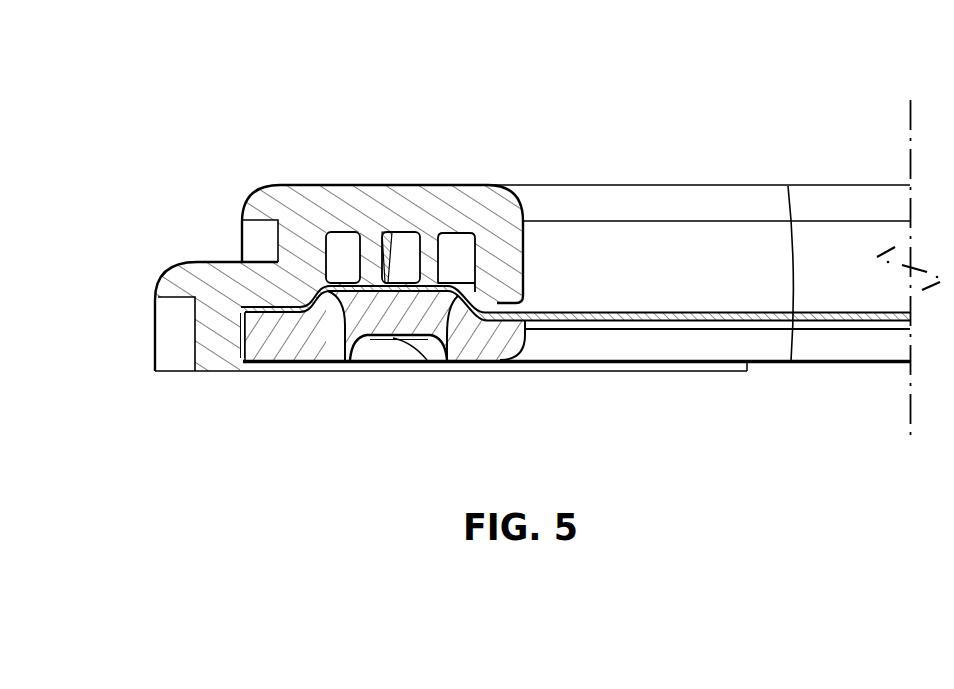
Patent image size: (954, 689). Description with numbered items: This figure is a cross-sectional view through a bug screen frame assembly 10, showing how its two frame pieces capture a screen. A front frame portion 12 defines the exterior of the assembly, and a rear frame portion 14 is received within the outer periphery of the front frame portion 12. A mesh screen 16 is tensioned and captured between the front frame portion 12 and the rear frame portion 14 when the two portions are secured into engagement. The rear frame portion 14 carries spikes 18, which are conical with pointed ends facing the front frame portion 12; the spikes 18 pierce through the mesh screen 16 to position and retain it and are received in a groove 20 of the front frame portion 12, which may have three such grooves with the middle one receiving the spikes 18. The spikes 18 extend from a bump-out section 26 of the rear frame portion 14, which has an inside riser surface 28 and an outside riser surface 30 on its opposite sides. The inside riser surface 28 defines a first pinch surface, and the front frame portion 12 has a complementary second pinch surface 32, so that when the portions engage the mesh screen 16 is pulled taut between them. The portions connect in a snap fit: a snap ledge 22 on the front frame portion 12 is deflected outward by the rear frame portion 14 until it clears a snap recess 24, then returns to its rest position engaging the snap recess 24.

The bug screen frame assembly 10 is at (209, 126).
The front frame portion 12 is at (277, 197).
The rear frame portion 14 is at (472, 345).
The mesh screen 16 is at (670, 317).
The spikes 18 is at (402, 262).
The groove 20 is at (407, 241).
The snap ledge 22 is at (246, 345).
The snap recess 24 is at (275, 345).
The bump-out section 26 is at (387, 304).
The inside riser surface 28 is at (448, 340).
The outside riser surface 30 is at (345, 342).
The second pinch surface 32 is at (483, 300).